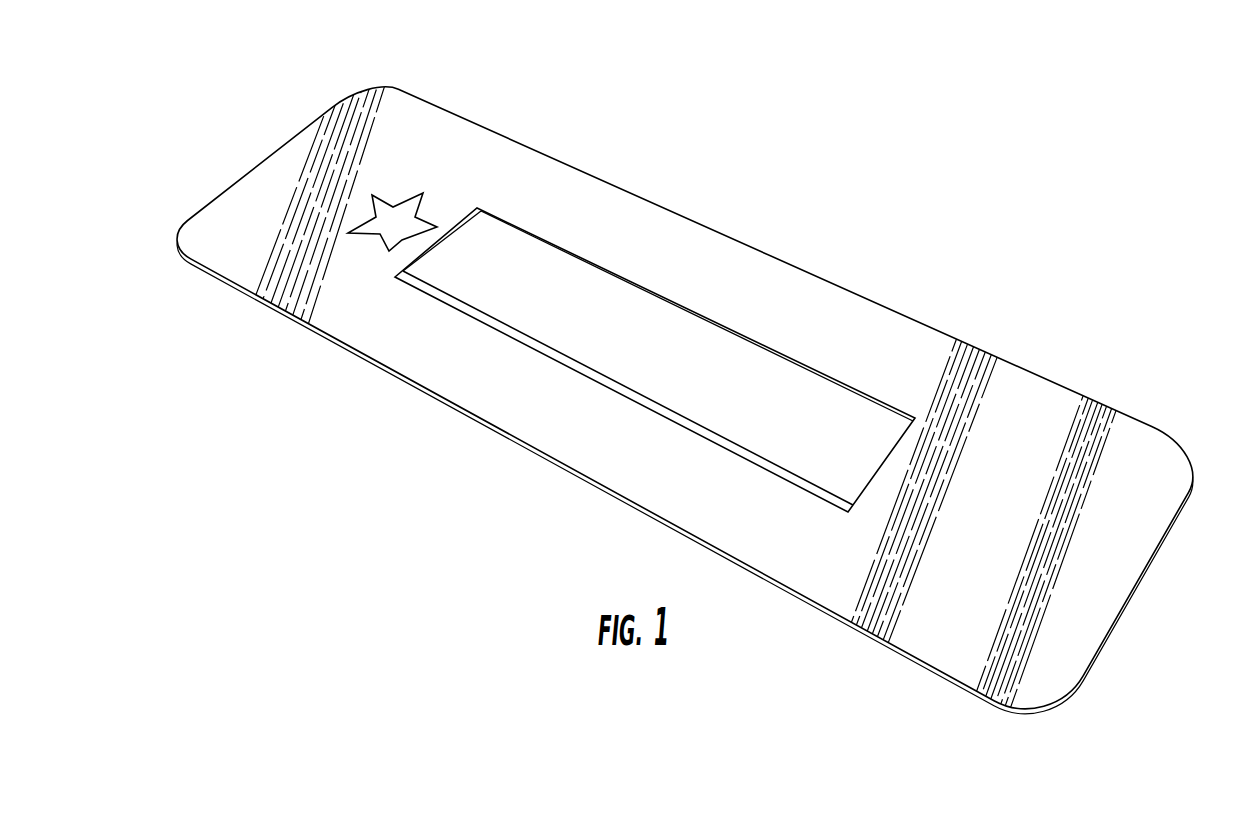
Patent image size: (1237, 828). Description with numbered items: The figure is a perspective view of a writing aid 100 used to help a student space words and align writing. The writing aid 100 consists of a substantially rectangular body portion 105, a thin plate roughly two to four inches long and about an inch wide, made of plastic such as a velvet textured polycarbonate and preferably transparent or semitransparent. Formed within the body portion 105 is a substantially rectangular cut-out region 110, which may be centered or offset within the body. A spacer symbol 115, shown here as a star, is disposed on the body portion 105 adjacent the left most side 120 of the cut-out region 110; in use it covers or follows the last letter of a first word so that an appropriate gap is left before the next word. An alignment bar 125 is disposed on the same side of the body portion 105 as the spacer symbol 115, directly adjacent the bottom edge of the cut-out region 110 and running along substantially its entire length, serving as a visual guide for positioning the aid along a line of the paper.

The writing aid 100 is at (700, 383).
The body portion 105 is at (1150, 566).
The cut-out region 110 is at (532, 233).
The spacer symbol 115 is at (391, 204).
The left most side 120 is at (404, 270).
The alignment bar 125 is at (805, 490).